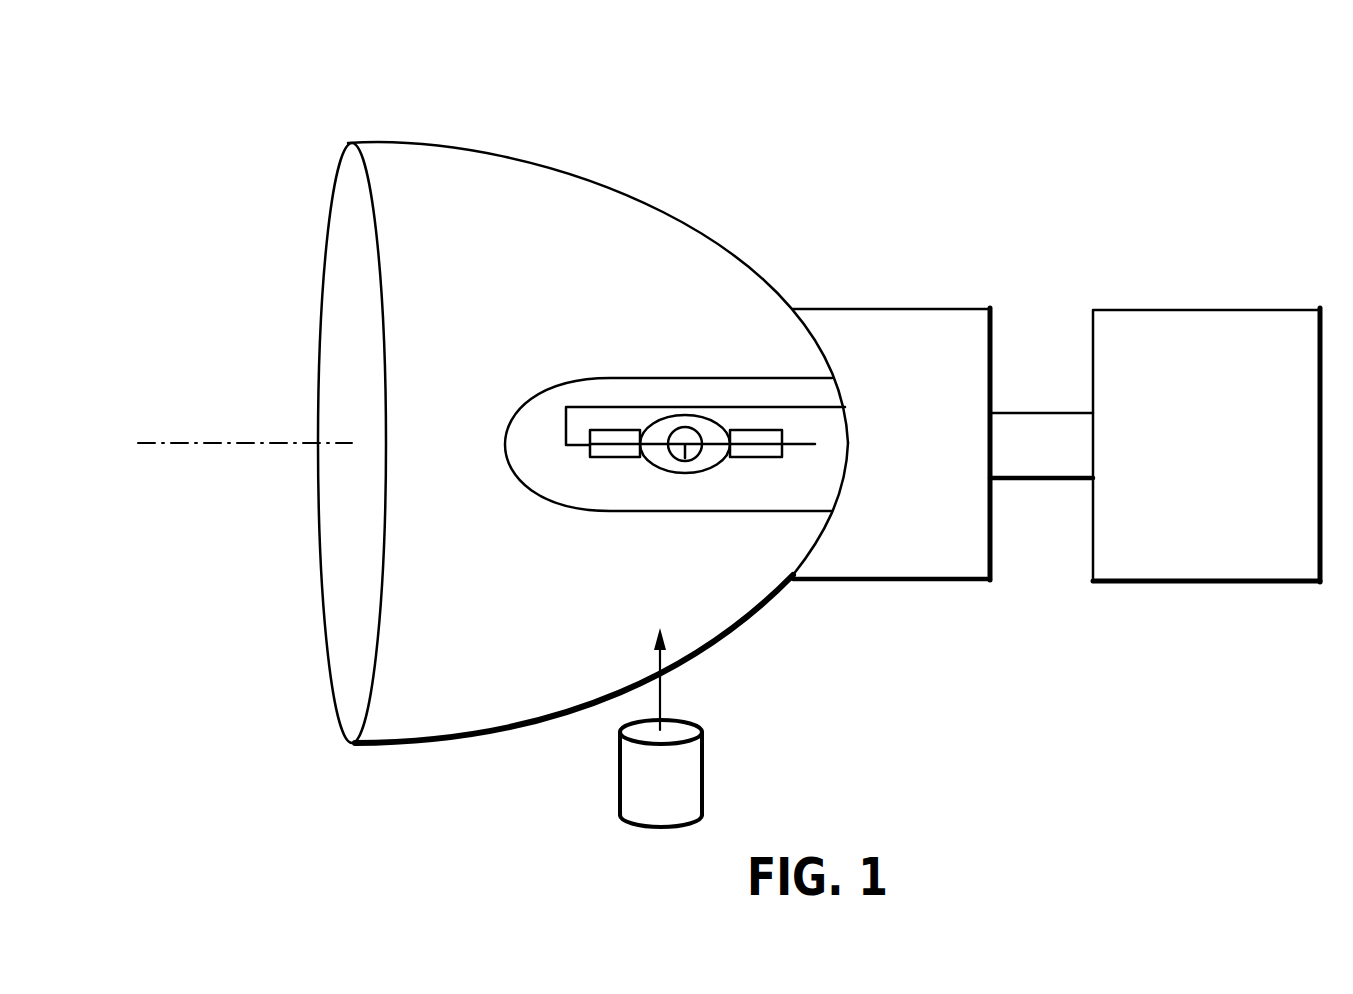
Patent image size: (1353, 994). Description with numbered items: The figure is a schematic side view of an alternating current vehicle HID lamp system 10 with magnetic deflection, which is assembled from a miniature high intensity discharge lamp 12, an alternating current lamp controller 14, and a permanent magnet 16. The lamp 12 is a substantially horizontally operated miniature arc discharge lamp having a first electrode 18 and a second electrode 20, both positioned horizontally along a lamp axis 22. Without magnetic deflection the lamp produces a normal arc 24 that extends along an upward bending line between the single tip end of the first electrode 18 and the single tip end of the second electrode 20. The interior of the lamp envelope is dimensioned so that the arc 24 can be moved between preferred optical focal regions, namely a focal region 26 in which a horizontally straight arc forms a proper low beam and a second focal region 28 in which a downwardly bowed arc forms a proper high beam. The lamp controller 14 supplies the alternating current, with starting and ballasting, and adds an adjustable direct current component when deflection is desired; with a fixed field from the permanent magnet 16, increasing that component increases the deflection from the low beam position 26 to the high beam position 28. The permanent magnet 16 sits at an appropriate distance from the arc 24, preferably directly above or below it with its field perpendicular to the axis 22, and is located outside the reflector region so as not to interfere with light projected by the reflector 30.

The lamp system 10 is at (350, 86).
The miniature high intensity discharge lamp 12 is at (613, 430).
The alternating current lamp controller 14 is at (1217, 310).
The permanent magnet 16 is at (703, 773).
The first electrode 18 is at (647, 443).
The second electrode 20 is at (717, 440).
The lamp axis 22 is at (235, 441).
The normal arc 24 is at (678, 430).
The low beam focal region 26 is at (685, 457).
The high beam focal region 28 is at (678, 457).
The reflector 30 is at (570, 173).